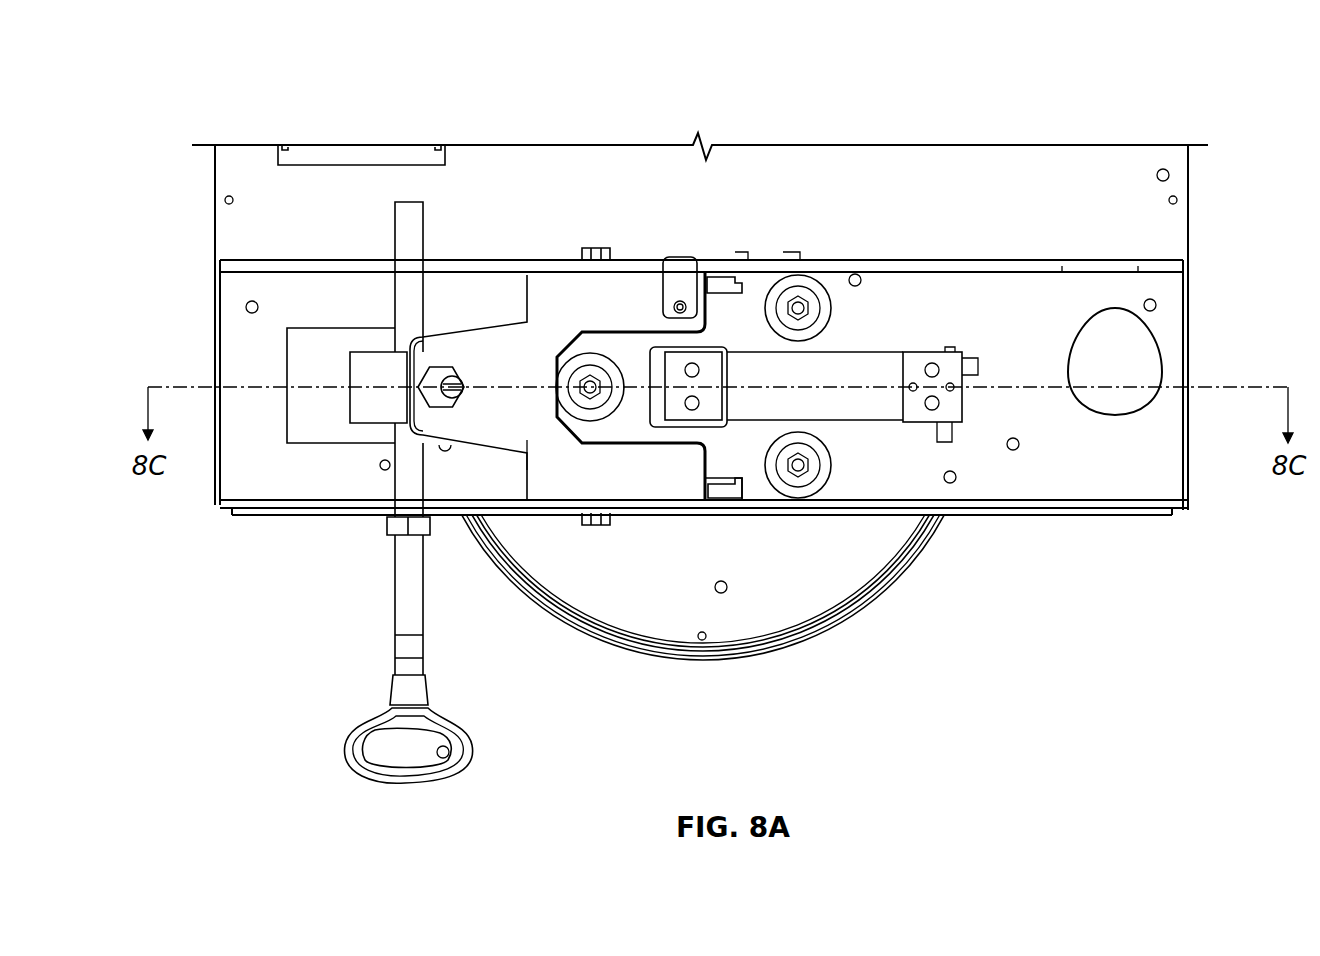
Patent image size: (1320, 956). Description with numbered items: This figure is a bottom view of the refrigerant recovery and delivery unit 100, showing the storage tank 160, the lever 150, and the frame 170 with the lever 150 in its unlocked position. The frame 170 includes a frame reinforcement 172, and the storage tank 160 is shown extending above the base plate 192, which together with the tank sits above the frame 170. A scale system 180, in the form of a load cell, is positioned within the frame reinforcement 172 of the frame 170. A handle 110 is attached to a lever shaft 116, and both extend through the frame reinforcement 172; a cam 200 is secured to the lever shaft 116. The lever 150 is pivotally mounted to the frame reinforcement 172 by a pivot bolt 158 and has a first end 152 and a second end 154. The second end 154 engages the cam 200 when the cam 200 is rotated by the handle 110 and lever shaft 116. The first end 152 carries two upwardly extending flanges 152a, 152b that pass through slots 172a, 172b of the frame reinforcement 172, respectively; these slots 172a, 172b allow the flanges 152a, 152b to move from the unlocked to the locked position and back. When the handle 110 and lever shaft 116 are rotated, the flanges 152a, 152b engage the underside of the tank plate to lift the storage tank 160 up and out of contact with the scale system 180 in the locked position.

The refrigerant recovery and delivery unit 100 is at (1112, 104).
The frame 170 is at (1122, 205).
The frame reinforcement 172 is at (1165, 465).
The cam 200 is at (382, 402).
The lever shaft 116 is at (407, 572).
The handle 110 is at (428, 757).
The second end 154 is at (485, 348).
The lever 150 is at (530, 417).
The first end 152 is at (615, 297).
The upwardly extending flange 152b is at (720, 282).
The slot 172b is at (742, 283).
The upwardly extending flange 152a is at (713, 505).
The slot 172a is at (740, 505).
The pivot bolt 158 is at (590, 532).
The scale system 180 is at (867, 407).
The storage tank 160 is at (862, 603).
The base plate 192 is at (742, 608).